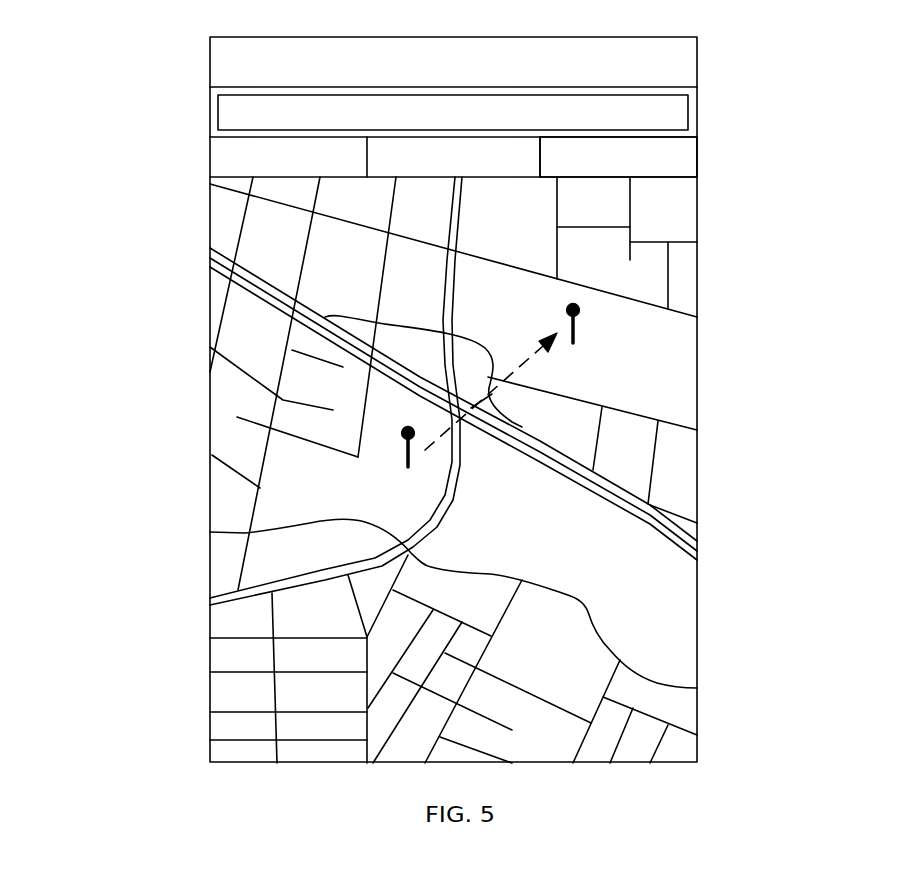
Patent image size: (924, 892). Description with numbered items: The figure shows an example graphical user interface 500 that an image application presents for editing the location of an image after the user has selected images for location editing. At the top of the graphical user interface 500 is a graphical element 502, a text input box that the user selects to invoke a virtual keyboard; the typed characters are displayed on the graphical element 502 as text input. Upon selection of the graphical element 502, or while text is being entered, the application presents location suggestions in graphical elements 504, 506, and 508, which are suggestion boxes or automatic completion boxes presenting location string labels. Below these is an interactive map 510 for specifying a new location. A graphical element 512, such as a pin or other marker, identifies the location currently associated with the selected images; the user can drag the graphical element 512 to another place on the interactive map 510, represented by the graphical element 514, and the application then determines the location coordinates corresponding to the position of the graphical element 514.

The graphical user interface 500 is at (875, 161).
The graphical element 502 is at (453, 112).
The graphical element 504 is at (228, 157).
The graphical element 506 is at (472, 177).
The graphical element 508 is at (687, 157).
The interactive map 510 is at (453, 470).
The graphical element 512 is at (406, 452).
The graphical element 514 is at (575, 323).